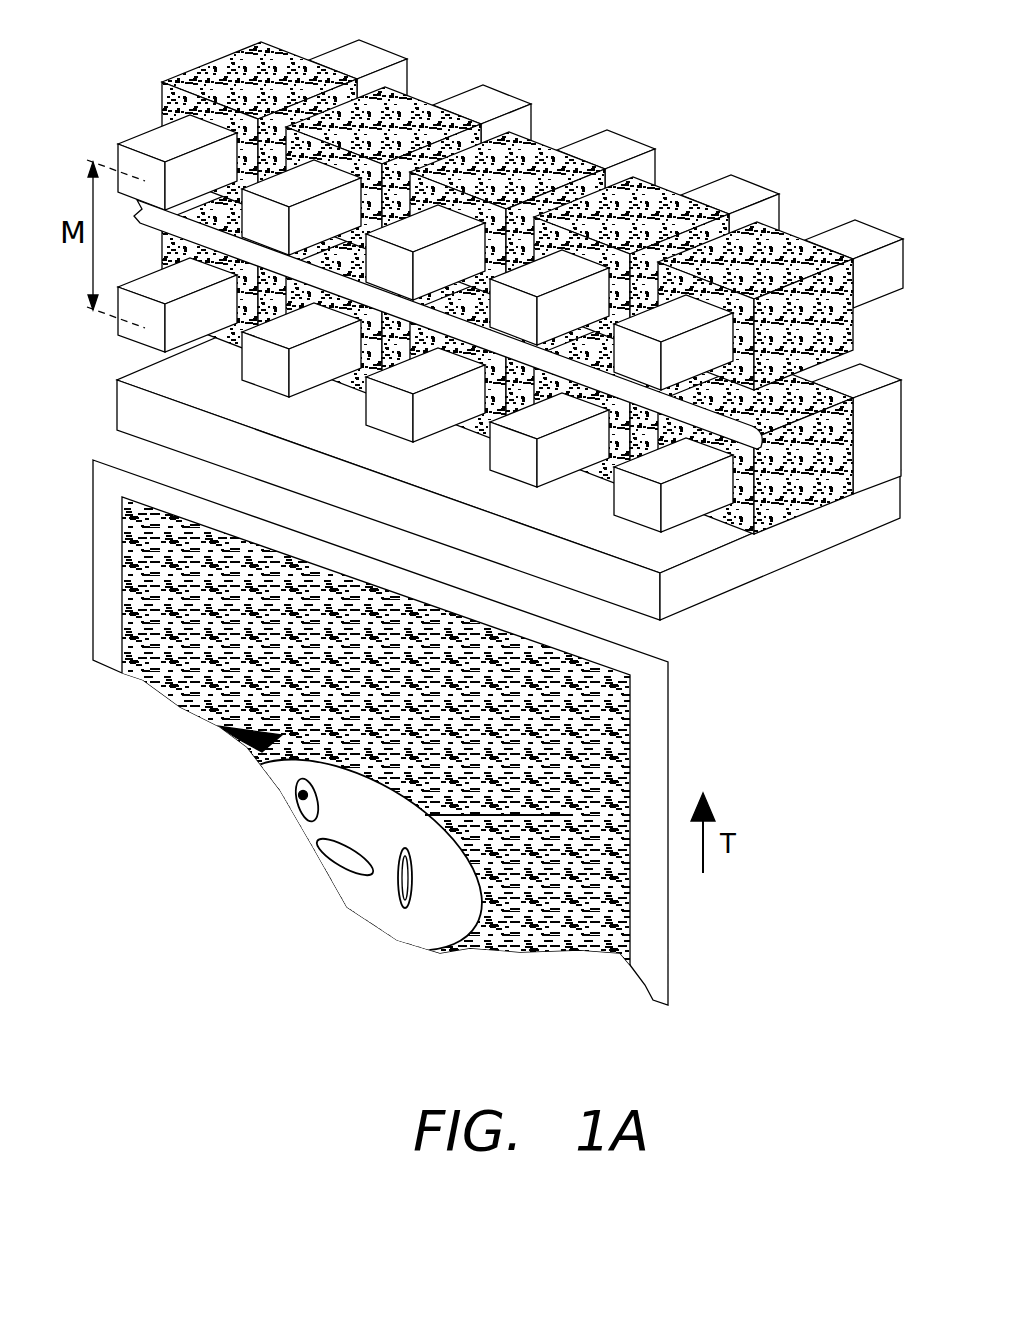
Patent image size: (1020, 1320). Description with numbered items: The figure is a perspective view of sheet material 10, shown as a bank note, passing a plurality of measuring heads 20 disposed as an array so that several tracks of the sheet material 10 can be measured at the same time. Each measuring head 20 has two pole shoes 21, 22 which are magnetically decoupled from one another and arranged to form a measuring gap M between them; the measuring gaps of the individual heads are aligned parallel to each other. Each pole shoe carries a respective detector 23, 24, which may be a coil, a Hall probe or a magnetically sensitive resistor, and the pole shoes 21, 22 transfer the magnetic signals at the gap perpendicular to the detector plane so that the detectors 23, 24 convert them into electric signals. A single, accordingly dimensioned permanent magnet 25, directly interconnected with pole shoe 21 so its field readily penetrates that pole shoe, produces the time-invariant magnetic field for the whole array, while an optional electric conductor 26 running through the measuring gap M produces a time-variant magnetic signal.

The sheet material 10 is at (623, 755).
The measuring head 20 is at (488, 355).
The pole shoe 21 is at (153, 332).
The pole shoe 22 is at (170, 140).
The detector 23 is at (817, 483).
The detector 24 is at (780, 247).
The permanent magnet 25 is at (688, 577).
The electric conductor 26 is at (717, 423).